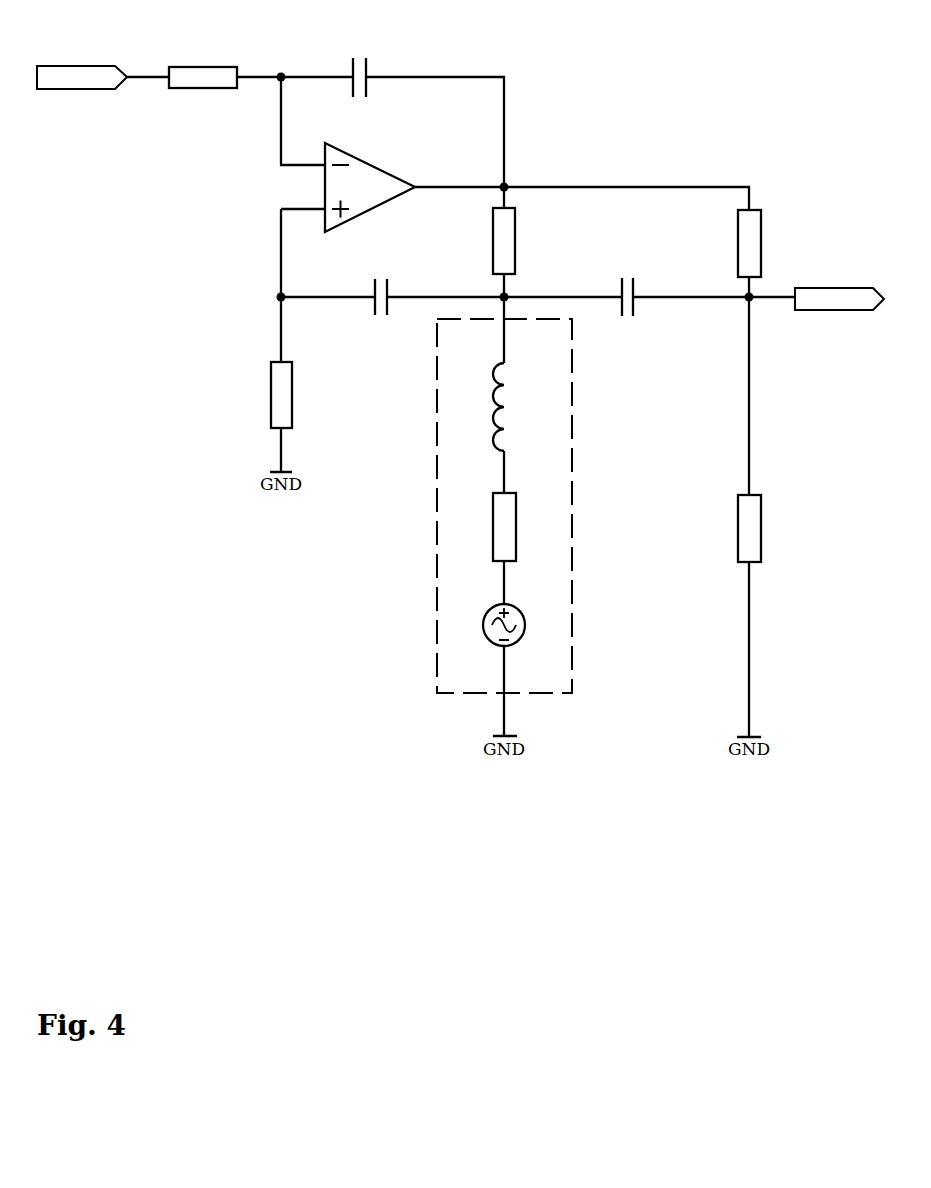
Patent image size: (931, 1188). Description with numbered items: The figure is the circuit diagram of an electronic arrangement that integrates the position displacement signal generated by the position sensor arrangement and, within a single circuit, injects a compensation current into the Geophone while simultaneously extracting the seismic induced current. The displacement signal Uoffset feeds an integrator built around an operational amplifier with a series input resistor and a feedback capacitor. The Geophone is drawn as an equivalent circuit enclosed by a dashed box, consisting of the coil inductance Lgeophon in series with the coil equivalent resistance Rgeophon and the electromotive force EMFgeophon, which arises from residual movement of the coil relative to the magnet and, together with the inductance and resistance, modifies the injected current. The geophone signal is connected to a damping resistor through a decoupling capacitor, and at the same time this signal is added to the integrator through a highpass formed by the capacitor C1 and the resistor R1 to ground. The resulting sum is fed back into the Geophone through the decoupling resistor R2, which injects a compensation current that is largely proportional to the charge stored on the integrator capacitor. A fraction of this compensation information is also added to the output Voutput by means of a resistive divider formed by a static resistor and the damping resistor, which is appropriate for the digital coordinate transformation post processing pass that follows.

The offset signal input Uoffset is at (82, 77).
The output signal Voutput is at (839, 299).
The decoupling resistor R2 is at (516, 241).
The highpass capacitor C1 is at (382, 286).
The highpass resistor R1 is at (293, 395).
The geophone Geophone is at (555, 485).
The coil inductance Lgeophon is at (483, 407).
The coil equivalent resistance Rgeophon is at (489, 515).
The coil electromotive force EMFgeophon is at (494, 616).